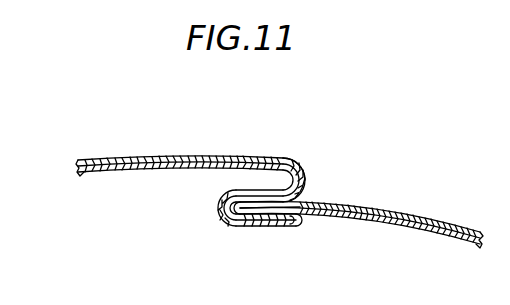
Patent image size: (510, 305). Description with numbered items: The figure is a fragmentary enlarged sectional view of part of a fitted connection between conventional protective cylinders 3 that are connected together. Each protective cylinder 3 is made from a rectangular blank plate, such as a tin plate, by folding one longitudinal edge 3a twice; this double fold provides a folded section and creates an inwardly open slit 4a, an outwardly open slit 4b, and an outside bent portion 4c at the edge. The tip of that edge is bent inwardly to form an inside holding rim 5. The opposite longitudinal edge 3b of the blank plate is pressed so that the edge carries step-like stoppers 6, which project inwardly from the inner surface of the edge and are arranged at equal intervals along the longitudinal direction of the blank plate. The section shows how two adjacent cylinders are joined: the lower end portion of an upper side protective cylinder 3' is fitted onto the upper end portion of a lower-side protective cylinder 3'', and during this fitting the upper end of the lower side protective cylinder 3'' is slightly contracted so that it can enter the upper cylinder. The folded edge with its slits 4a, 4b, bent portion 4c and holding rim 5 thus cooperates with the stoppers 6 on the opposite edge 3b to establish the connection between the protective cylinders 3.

The protective cylinder 3 is at (361, 214).
The upper side protective cylinder 3' is at (279, 175).
The lower-side protective cylinder 3'' is at (279, 222).
The longitudinal edge 3a is at (267, 160).
The opposite longitudinal edge 3b is at (320, 201).
The inwardly open slit 4a is at (298, 172).
The outwardly open slit 4b is at (232, 231).
The outside bent portion 4c is at (306, 182).
The inside holding rim 5 is at (258, 238).
The step-like stoppers 6 is at (262, 229).